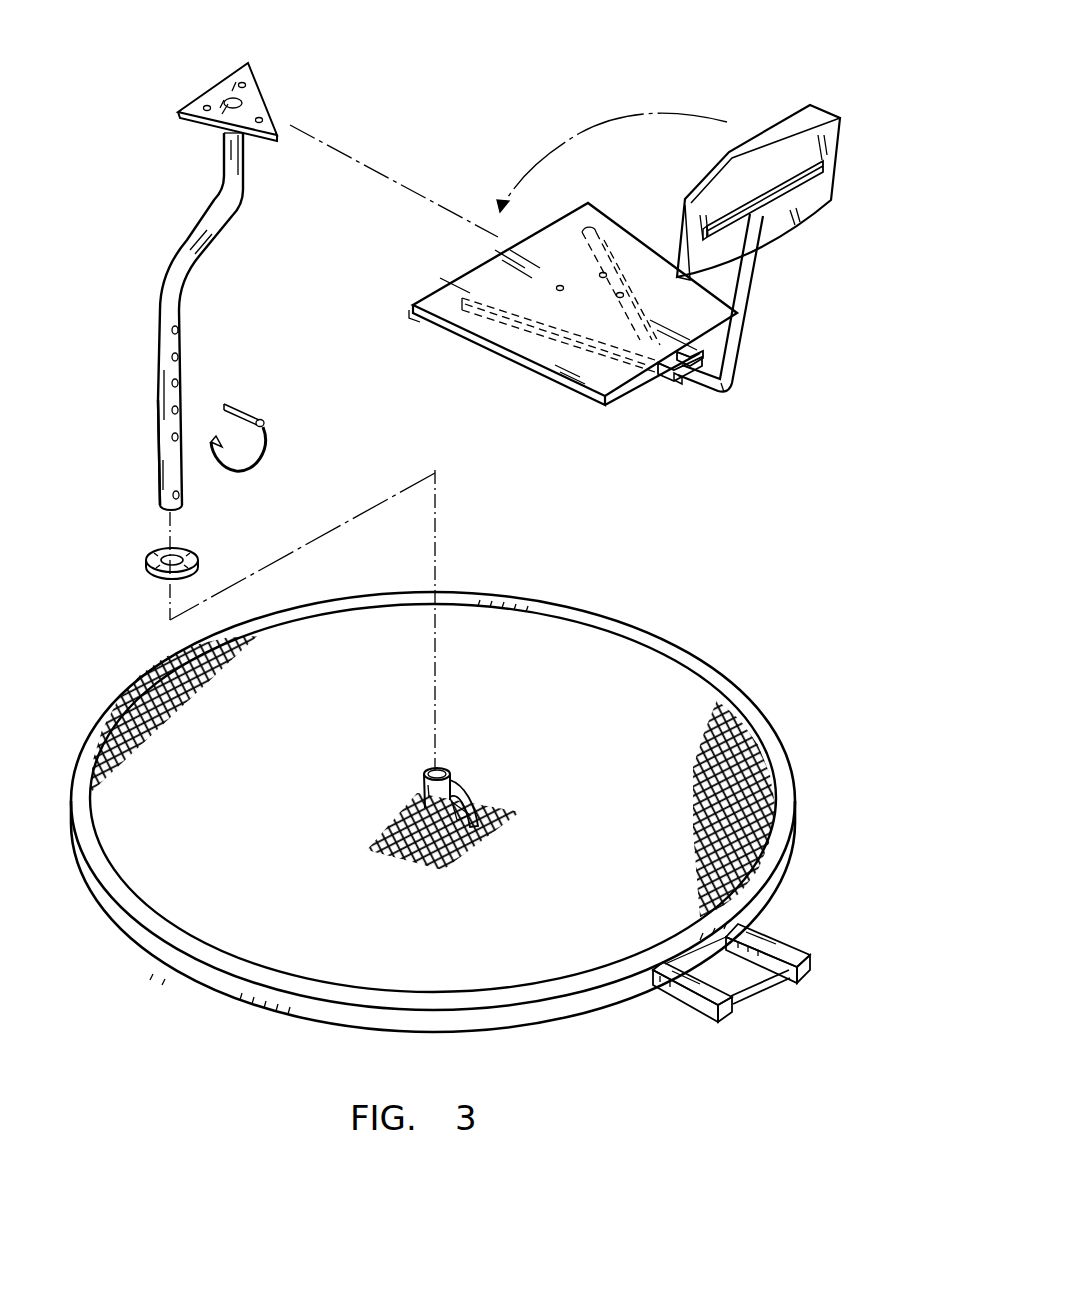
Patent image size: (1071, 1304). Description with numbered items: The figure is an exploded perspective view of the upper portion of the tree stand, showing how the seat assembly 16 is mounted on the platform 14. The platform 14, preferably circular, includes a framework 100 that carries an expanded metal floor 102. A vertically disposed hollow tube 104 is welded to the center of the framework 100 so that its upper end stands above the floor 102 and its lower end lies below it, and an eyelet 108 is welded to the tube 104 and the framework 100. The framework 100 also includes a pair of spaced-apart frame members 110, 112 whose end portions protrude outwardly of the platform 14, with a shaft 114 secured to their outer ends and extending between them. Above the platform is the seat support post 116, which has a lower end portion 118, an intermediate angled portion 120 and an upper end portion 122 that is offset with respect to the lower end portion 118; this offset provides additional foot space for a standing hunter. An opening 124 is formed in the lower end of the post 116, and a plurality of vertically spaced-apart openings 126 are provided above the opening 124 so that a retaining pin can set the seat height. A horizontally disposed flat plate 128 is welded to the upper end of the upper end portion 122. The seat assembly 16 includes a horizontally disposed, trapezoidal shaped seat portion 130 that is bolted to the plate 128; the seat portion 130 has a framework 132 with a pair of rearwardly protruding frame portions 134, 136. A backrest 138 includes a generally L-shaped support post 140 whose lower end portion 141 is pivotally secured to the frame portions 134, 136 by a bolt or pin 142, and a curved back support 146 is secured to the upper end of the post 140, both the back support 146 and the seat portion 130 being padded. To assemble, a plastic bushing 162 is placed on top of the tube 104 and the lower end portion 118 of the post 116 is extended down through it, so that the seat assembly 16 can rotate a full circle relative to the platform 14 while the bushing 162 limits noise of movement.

The platform 14 is at (675, 626).
The seat assembly 16 is at (398, 166).
The framework 100 is at (290, 1022).
The expanded metal floor 102 is at (742, 727).
The hollow tube 104 is at (425, 780).
The eyelet 108 is at (466, 787).
The frame member 110 is at (777, 928).
The frame member 112 is at (696, 1006).
The shaft 114 is at (770, 997).
The seat support post 116 is at (180, 313).
The lower end portion 118 is at (160, 413).
The intermediate angled portion 120 is at (196, 246).
The upper end portion 122 is at (236, 156).
The opening 124 is at (185, 498).
The openings 126 is at (190, 354).
The flat plate 128 is at (258, 93).
The seat portion 130 is at (558, 316).
The framework 132 is at (612, 250).
The frame portion 134 is at (712, 354).
The frame portion 136 is at (667, 372).
The backrest 138 is at (838, 225).
The support post 140 is at (752, 298).
The lower end portion 141 is at (689, 392).
The bolt or pin 142 is at (676, 387).
The curved back support 146 is at (814, 130).
The plastic bushing 162 is at (150, 572).